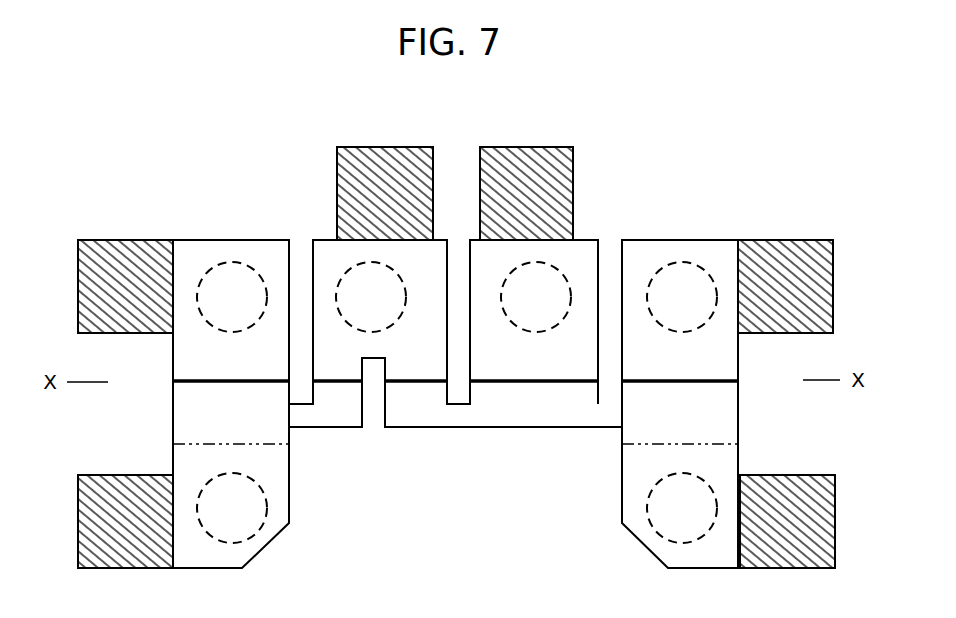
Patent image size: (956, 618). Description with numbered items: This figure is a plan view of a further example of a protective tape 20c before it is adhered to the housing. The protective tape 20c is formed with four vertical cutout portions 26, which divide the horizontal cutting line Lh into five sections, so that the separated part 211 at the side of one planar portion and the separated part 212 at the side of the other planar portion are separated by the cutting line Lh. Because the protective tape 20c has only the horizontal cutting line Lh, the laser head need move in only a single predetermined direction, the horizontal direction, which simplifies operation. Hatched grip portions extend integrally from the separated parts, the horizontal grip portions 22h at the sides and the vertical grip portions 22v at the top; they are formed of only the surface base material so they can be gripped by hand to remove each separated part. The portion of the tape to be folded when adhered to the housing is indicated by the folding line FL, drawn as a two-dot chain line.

The horizontal grip portion 22h is at (108, 250).
The vertical grip portion 22v is at (337, 152).
The vertical cutout portion 26 is at (293, 264).
The protective tape 20c is at (645, 232).
The separated part 211 is at (699, 248).
The separated part 212 is at (728, 412).
The horizontal cutting line Lh is at (200, 380).
The folding line FL is at (270, 445).